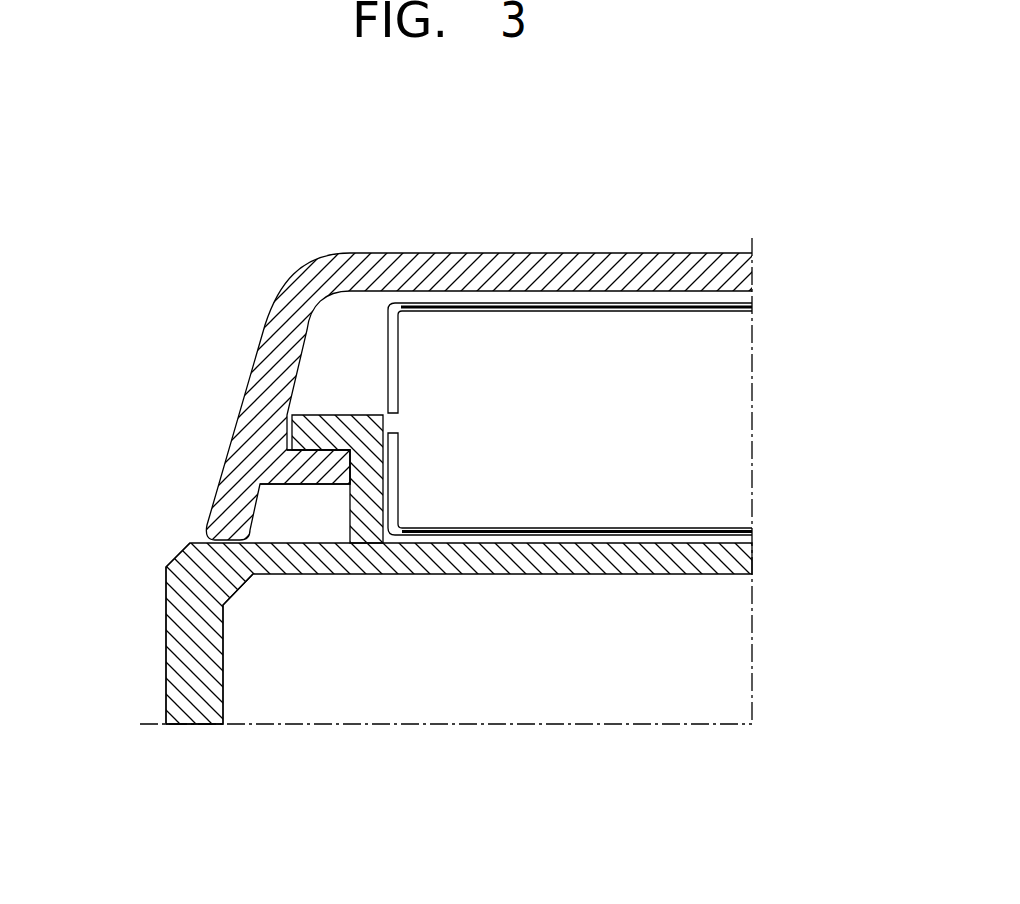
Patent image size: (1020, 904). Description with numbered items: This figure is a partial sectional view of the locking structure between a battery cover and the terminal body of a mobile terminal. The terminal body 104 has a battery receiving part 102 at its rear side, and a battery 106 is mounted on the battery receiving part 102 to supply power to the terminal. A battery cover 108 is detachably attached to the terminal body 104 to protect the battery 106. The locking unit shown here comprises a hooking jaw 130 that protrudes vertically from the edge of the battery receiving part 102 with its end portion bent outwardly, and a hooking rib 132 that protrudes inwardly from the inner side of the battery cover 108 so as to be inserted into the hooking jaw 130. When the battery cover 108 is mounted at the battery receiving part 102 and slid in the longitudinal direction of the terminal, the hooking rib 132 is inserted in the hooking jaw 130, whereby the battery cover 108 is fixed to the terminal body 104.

The battery receiving part 102 is at (520, 543).
The terminal body 104 is at (180, 650).
The battery 106 is at (532, 323).
The battery cover 108 is at (597, 260).
The hooking jaw 130 is at (331, 423).
The hooking rib 132 is at (303, 470).